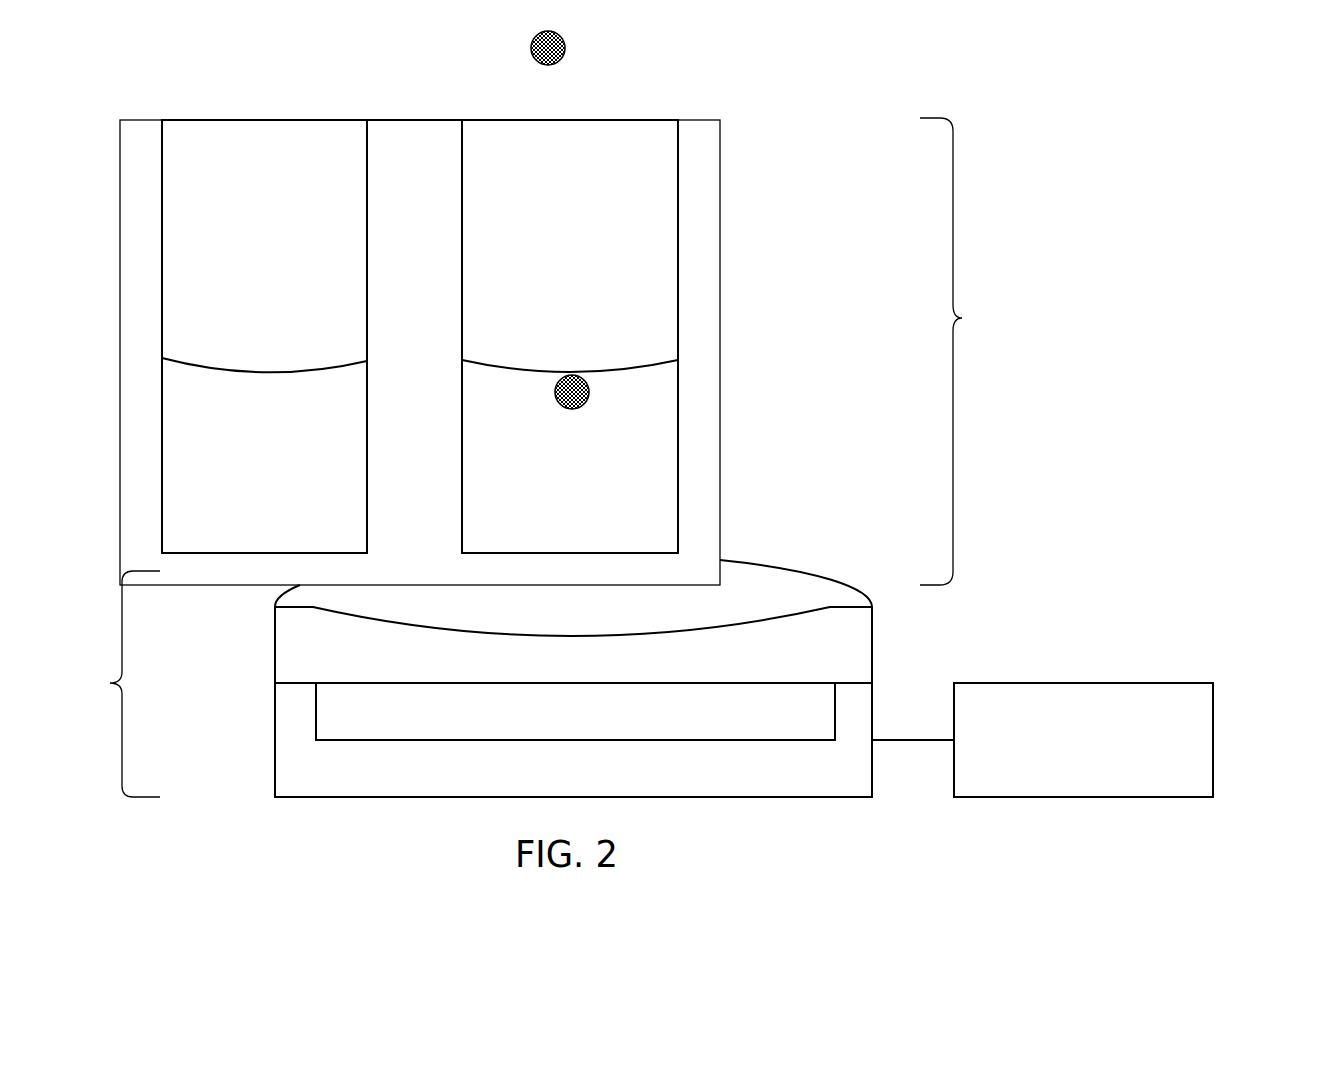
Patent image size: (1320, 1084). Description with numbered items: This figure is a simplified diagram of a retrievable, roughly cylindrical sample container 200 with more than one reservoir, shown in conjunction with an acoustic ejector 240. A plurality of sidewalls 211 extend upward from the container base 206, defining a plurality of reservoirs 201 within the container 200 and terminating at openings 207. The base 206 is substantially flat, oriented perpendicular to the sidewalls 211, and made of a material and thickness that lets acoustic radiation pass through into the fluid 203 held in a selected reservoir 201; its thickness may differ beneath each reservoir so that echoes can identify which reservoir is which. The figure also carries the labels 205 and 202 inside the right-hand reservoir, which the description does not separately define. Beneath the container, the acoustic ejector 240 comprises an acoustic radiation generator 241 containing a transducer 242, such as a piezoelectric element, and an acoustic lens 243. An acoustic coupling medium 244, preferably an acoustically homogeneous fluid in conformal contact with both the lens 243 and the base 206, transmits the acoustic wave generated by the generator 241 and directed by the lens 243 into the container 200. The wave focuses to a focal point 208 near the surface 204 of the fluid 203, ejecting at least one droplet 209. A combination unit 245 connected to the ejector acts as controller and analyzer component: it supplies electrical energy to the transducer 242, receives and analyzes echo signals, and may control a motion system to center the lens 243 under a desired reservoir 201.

The container 200 is at (968, 351).
The reservoir 201 is at (478, 119).
The lower portion of well 202 is at (633, 533).
The fluid 203 is at (502, 370).
The surface 204 is at (628, 370).
The upper portion of well 205 is at (633, 173).
The container base 206 is at (322, 580).
The opening 207 is at (317, 119).
The focal point 208 is at (589, 393).
The droplet 209 is at (566, 52).
The sidewall 211 is at (137, 119).
The acoustic ejector 240 is at (110, 683).
The acoustic radiation generator 241 is at (285, 767).
The transducer 242 is at (316, 703).
The acoustic lens 243 is at (285, 643).
The acoustic coupling medium 244 is at (808, 582).
The combination unit 245 is at (1213, 719).